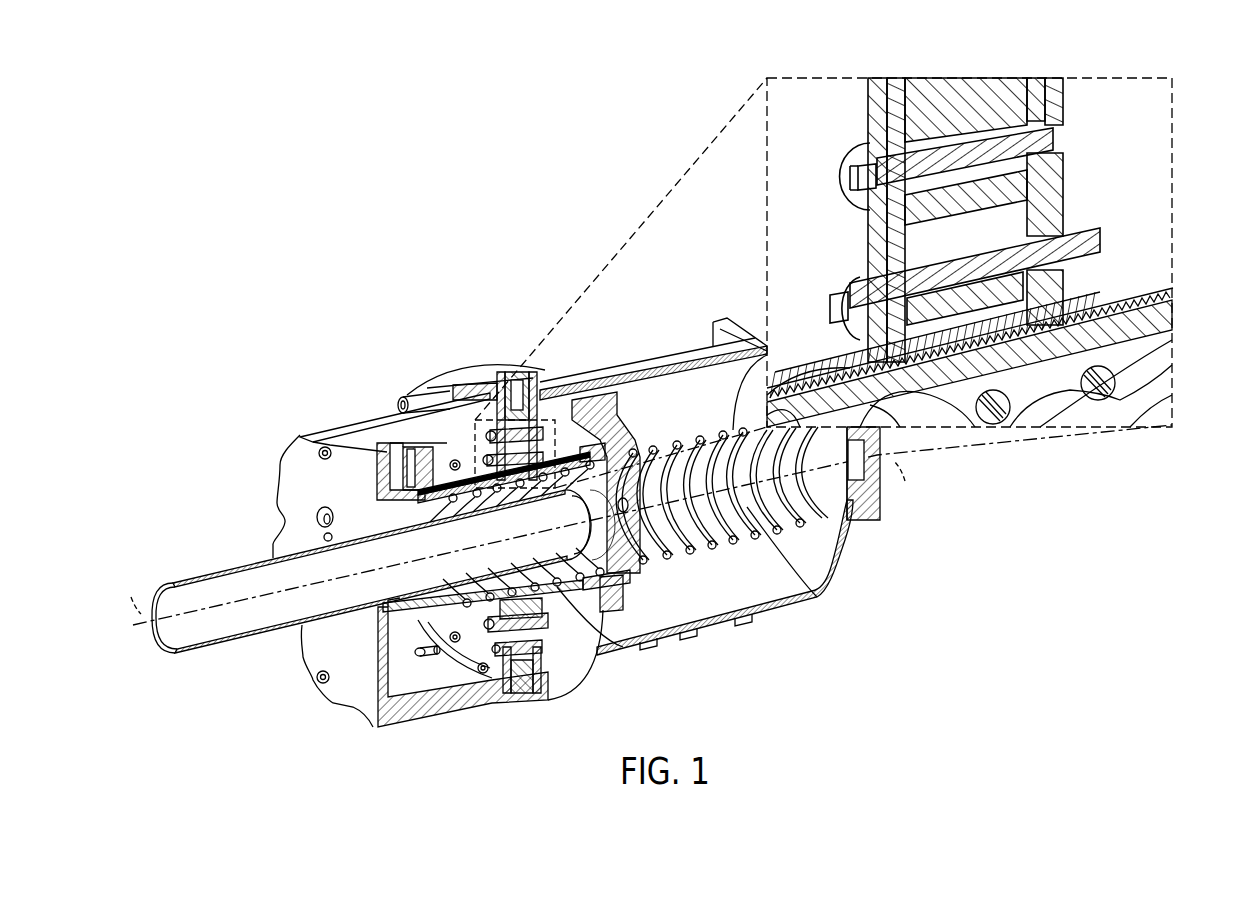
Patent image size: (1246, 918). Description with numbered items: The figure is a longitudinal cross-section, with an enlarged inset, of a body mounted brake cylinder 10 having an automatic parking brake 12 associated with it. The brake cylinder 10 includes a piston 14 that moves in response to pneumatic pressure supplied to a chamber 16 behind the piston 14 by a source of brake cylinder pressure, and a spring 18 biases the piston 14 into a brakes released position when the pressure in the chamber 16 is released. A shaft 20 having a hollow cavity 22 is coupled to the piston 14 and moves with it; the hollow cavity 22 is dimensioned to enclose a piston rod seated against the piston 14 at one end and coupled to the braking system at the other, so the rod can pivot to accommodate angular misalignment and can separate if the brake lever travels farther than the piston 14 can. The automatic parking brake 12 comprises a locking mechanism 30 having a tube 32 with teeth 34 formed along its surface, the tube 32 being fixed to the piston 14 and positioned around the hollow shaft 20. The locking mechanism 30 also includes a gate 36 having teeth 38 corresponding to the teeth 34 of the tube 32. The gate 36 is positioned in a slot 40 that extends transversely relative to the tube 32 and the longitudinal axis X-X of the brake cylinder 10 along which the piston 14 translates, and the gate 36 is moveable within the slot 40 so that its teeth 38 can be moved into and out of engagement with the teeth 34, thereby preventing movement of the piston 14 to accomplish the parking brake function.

The brake cylinder 10 is at (296, 300).
The automatic parking brake 12 is at (398, 392).
The piston 14 is at (615, 605).
The chamber 16 is at (694, 603).
The spring 18 is at (468, 605).
The shaft 20 is at (205, 648).
The hollow cavity 22 is at (232, 594).
The locking mechanism 30 is at (818, 77).
The tube 32 is at (550, 590).
The teeth 34 is at (1166, 306).
The gate 36 is at (946, 393).
The teeth 38 is at (1000, 400).
The slot 40 is at (1014, 188).